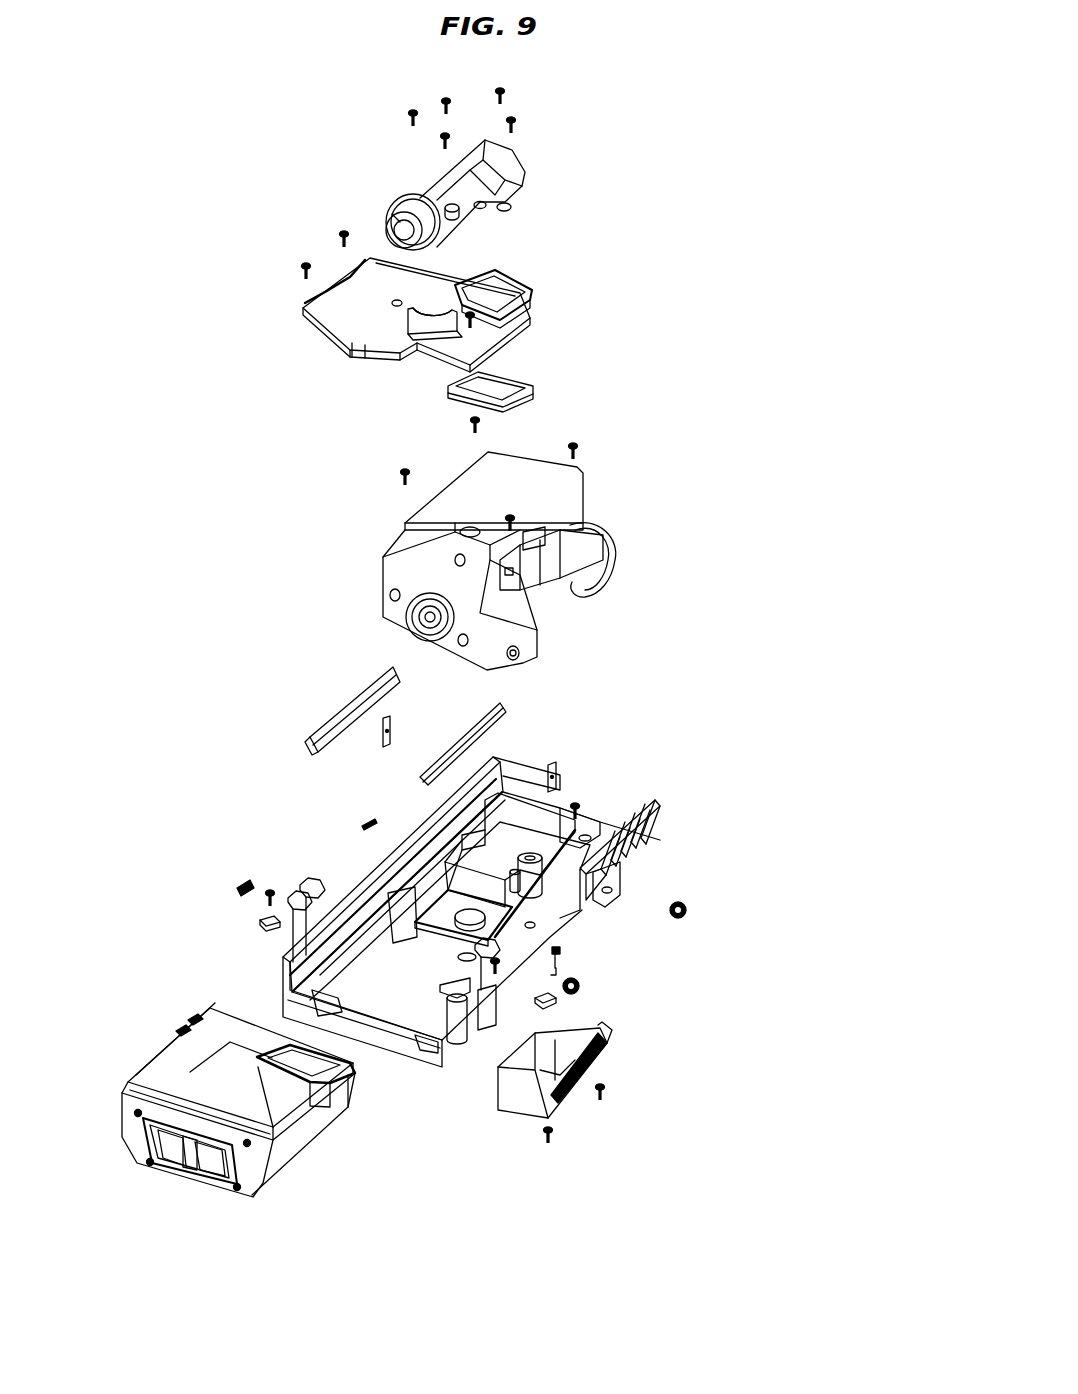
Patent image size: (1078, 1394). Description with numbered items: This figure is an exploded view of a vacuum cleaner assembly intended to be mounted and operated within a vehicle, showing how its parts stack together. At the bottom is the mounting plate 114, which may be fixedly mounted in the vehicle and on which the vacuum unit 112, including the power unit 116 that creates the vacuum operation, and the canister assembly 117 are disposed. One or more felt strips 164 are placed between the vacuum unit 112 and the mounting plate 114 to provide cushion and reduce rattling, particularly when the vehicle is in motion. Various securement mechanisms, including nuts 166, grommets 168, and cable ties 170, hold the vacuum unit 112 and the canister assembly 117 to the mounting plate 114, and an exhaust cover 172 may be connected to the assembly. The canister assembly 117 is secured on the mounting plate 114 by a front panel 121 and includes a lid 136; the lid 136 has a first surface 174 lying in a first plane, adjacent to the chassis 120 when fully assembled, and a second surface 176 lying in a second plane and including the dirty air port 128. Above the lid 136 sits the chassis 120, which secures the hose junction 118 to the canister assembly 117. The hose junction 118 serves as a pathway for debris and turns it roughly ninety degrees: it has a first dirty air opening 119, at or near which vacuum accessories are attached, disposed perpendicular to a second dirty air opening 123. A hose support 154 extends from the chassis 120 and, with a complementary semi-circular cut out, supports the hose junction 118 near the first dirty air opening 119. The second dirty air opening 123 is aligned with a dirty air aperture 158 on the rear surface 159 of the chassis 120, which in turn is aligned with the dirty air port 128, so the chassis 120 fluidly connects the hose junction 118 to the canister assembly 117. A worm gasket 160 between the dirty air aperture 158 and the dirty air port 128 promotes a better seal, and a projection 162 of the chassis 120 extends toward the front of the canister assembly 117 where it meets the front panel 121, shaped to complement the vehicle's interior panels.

The vacuum unit 112 is at (588, 493).
The mounting plate 114 is at (667, 803).
The power unit 116 is at (525, 512).
The canister assembly 117 is at (157, 1051).
The hose junction 118 is at (522, 195).
The first dirty air opening 119 is at (398, 226).
The chassis 120 is at (545, 305).
The front panel 121 is at (138, 1137).
The second dirty air opening 123 is at (489, 214).
The dirty air port 128 is at (330, 1080).
The lid 136 is at (243, 1078).
The hose support 154 is at (437, 337).
The dirty air aperture 158 is at (500, 300).
The rear surface 159 is at (433, 283).
The worm gasket 160 is at (532, 388).
The projection 162 is at (372, 355).
The felt strips 164 is at (512, 712).
The nuts 166 is at (572, 772).
The grommets 168 is at (690, 902).
The cable ties 170 is at (573, 960).
The exhaust cover 172 is at (610, 1055).
The first surface 174 is at (175, 1080).
The second surface 176 is at (272, 1055).